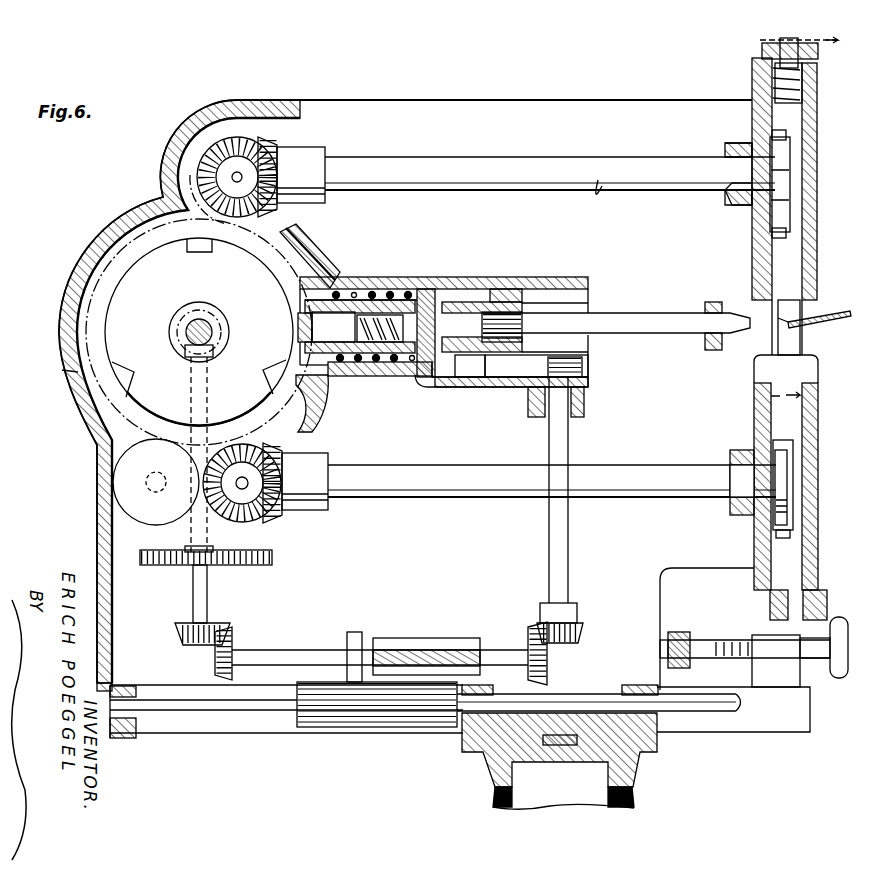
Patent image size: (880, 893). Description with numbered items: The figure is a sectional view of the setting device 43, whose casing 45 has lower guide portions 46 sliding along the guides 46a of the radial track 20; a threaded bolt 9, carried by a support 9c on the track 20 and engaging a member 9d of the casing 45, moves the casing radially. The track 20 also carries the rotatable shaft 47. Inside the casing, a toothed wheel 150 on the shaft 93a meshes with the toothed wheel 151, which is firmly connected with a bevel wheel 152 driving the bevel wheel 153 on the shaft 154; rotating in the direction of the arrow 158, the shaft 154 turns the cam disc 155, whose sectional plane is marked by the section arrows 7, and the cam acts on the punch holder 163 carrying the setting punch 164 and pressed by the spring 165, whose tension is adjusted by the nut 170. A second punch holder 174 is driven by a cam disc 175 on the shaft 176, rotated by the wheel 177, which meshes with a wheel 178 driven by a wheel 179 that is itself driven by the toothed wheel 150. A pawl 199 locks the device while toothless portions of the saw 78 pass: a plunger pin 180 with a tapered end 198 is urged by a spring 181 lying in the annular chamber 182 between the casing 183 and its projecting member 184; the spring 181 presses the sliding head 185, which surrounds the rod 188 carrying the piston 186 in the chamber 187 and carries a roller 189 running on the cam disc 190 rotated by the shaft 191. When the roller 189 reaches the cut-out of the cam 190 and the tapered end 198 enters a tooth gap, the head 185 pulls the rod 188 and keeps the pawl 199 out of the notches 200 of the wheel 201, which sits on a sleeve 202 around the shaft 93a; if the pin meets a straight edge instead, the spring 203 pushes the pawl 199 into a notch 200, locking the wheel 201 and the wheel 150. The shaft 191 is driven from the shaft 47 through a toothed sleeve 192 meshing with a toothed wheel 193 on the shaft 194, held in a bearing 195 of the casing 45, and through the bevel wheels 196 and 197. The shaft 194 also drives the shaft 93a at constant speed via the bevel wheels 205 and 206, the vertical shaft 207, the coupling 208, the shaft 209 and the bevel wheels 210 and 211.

The bevel wheel 152 is at (232, 138).
The toothed wheel 151 is at (275, 142).
The bevel wheel 153 is at (290, 165).
The shaft 154 is at (506, 157).
The arrow 158 is at (598, 183).
The nut 170 is at (762, 50).
The section line 7 is at (803, 219).
The spring 165 is at (805, 92).
The cam disc 155 is at (738, 143).
The punch holder 163 is at (795, 212).
The toothed wheel 150 is at (292, 222).
The pawl 199 is at (340, 312).
The spring 203 is at (405, 292).
The rod 188 is at (477, 302).
The chamber 187 is at (505, 312).
The tapered end 198 is at (735, 310).
The setting punch 164 is at (816, 290).
The saw 78 is at (850, 313).
The setting device 43 is at (58, 318).
The sleeve 202 is at (172, 338).
The shaft 93a is at (208, 326).
The bevel wheel 211 is at (214, 333).
The plunger pin 180 is at (648, 313).
The casing 45 is at (70, 365).
The bevel wheel 210 is at (213, 352).
The wheel 201 is at (140, 395).
The notches 200 is at (278, 398).
The projecting member 184 is at (366, 355).
The casing 183 is at (343, 378).
The spring 181 is at (386, 378).
The annular chamber 182 is at (427, 380).
The sliding head 185 is at (436, 390).
The piston 186 is at (492, 380).
The roller 189 is at (470, 380).
The cam disc 190 is at (535, 395).
The shaft 191 is at (569, 436).
The second punch holder 174 is at (800, 440).
The cam disc 175 is at (790, 476).
The wheel 179 is at (113, 492).
The wheel 177 is at (285, 508).
The shaft 176 is at (620, 490).
The wheel 178 is at (248, 520).
The shaft 209 is at (162, 566).
The vertical shaft 207 is at (208, 590).
The coupling 208 is at (270, 566).
The bevel wheel 206 is at (222, 628).
The shaft 194 is at (312, 650).
The toothed wheel 193 is at (362, 636).
The bearing 195 is at (447, 640).
The bevel wheel 197 is at (578, 620).
The member 9d is at (680, 632).
The threaded bolt 9 is at (738, 640).
The bevel wheel 205 is at (235, 645).
The guides 46a is at (125, 690).
The lower guide portions 46 is at (100, 688).
The bevel wheel 196 is at (545, 665).
The support 9c is at (800, 680).
The radial track 20 is at (260, 735).
The toothed sleeve 192 is at (395, 727).
The shaft 47 is at (705, 712).